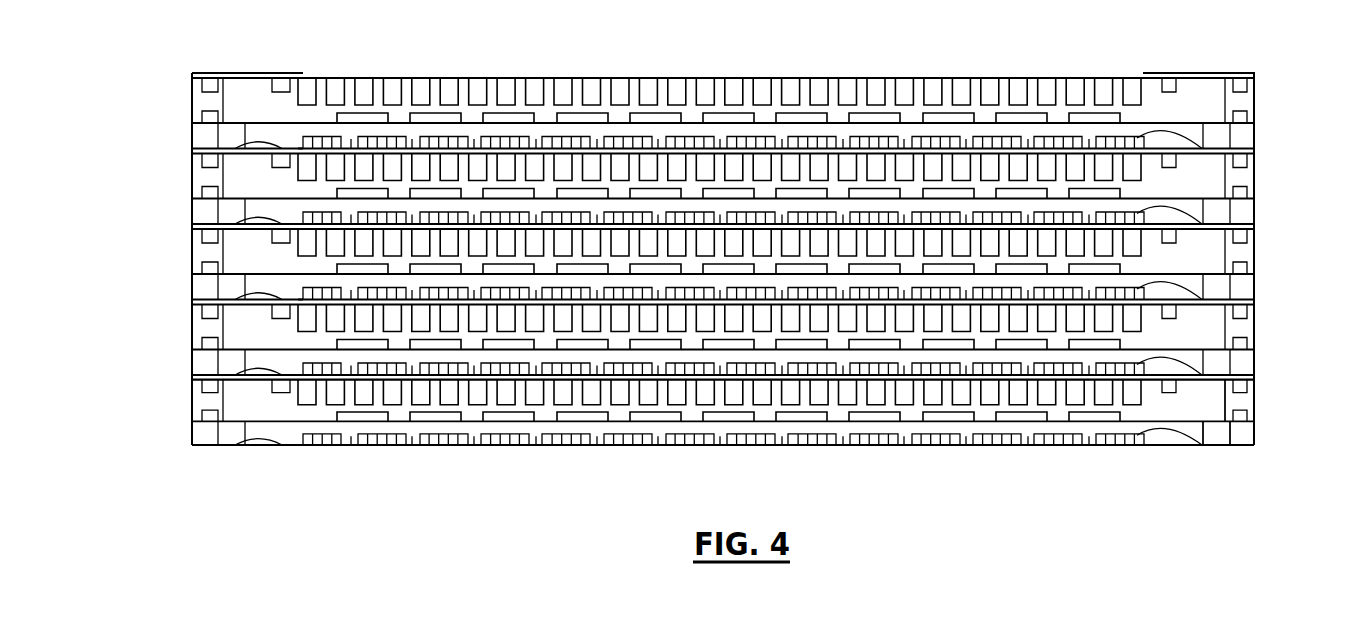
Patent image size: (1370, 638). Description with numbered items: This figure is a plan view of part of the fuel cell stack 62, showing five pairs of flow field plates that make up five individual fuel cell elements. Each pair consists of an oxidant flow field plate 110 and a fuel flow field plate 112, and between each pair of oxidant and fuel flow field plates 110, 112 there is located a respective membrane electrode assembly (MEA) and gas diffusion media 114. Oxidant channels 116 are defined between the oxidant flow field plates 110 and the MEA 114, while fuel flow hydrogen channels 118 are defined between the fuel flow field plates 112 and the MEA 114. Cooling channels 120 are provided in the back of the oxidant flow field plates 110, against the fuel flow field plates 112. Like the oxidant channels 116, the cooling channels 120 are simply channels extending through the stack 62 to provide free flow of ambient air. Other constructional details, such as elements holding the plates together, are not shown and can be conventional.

The fuel cell stack 62 is at (721, 222).
The oxidant flow field plates 110 is at (270, 402).
The fuel flow field plates 112 is at (1170, 430).
The membrane electrode assembly and gas diffusion media 114 is at (283, 223).
The oxidant channels 116 is at (1207, 307).
The fuel flow hydrogen channels 118 is at (1140, 205).
The cooling channels 120 is at (313, 320).